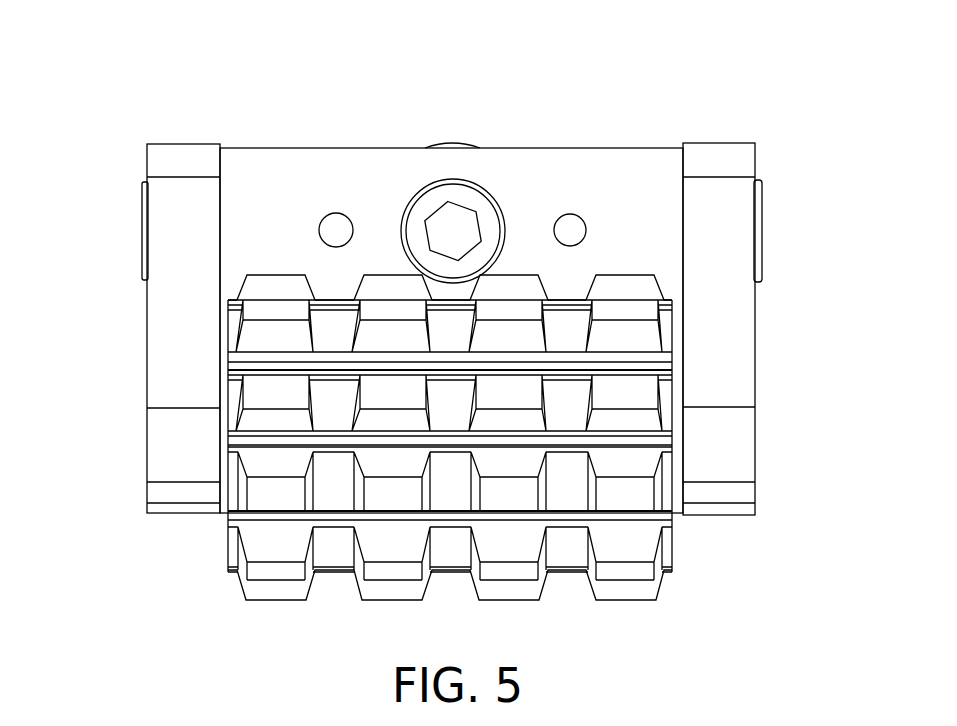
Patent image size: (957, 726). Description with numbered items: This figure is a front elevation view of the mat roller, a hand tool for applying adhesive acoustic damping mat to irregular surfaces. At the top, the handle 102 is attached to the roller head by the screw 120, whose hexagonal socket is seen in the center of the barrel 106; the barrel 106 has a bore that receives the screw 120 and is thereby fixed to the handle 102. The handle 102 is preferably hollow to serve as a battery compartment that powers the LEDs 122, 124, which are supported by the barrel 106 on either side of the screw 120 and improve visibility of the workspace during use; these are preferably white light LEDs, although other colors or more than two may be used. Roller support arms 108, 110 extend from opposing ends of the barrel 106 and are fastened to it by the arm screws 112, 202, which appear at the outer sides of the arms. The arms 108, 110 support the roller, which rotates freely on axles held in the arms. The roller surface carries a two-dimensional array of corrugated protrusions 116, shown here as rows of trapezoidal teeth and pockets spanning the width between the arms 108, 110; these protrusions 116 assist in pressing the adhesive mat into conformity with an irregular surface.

The handle 102 is at (440, 146).
The barrel 106 is at (618, 170).
The roller support arm 108 is at (180, 345).
The roller support arm 110 is at (732, 353).
The arm screw 112 is at (137, 228).
The corrugated protrusions 116 is at (620, 592).
The screw 120 is at (478, 207).
The LED 122 is at (333, 225).
The LED 124 is at (563, 225).
The arm screw 202 is at (763, 227).